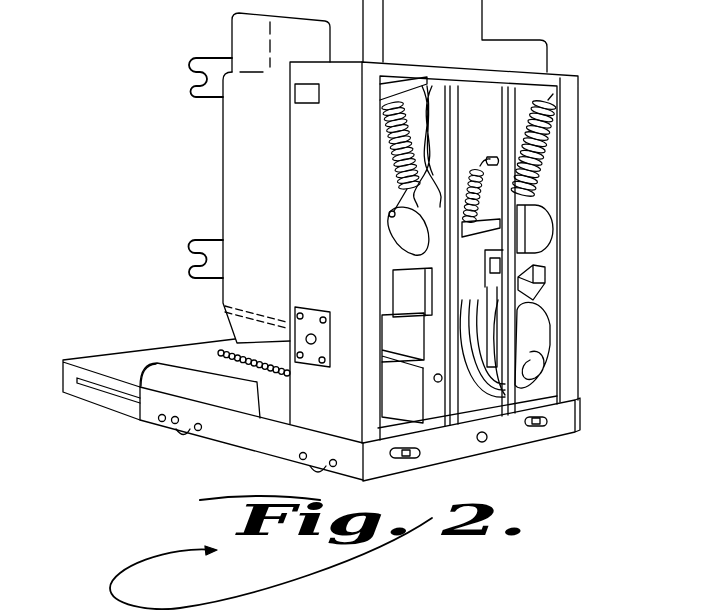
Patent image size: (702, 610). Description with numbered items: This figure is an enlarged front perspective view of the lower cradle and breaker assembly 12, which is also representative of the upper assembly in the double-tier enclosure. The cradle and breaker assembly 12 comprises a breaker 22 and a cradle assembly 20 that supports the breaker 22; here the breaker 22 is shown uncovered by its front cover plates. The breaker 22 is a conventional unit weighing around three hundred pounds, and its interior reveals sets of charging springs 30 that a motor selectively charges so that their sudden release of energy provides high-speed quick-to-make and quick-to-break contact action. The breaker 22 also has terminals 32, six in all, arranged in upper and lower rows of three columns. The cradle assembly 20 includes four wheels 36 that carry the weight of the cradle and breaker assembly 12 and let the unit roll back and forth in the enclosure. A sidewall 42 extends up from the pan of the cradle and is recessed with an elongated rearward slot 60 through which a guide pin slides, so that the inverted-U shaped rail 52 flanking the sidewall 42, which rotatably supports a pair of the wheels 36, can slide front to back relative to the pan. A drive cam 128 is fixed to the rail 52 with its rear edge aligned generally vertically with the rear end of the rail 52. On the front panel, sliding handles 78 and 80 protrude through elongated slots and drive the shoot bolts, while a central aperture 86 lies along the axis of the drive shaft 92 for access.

The cradle and breaker assembly 12 is at (146, 43).
The cradle assembly 20 is at (577, 420).
The breaker 22 is at (574, 268).
The charging springs 30 is at (533, 142).
The terminals 32 is at (195, 94).
The wheels 36 is at (180, 437).
The sidewall 42 is at (95, 393).
The rail 52 is at (253, 447).
The rearward slot 60 is at (77, 379).
The sliding handle 78 is at (408, 457).
The sliding handle 80 is at (538, 427).
The central aperture 86 is at (482, 443).
The drive shaft 92 is at (233, 353).
The drive cam 128 is at (157, 370).